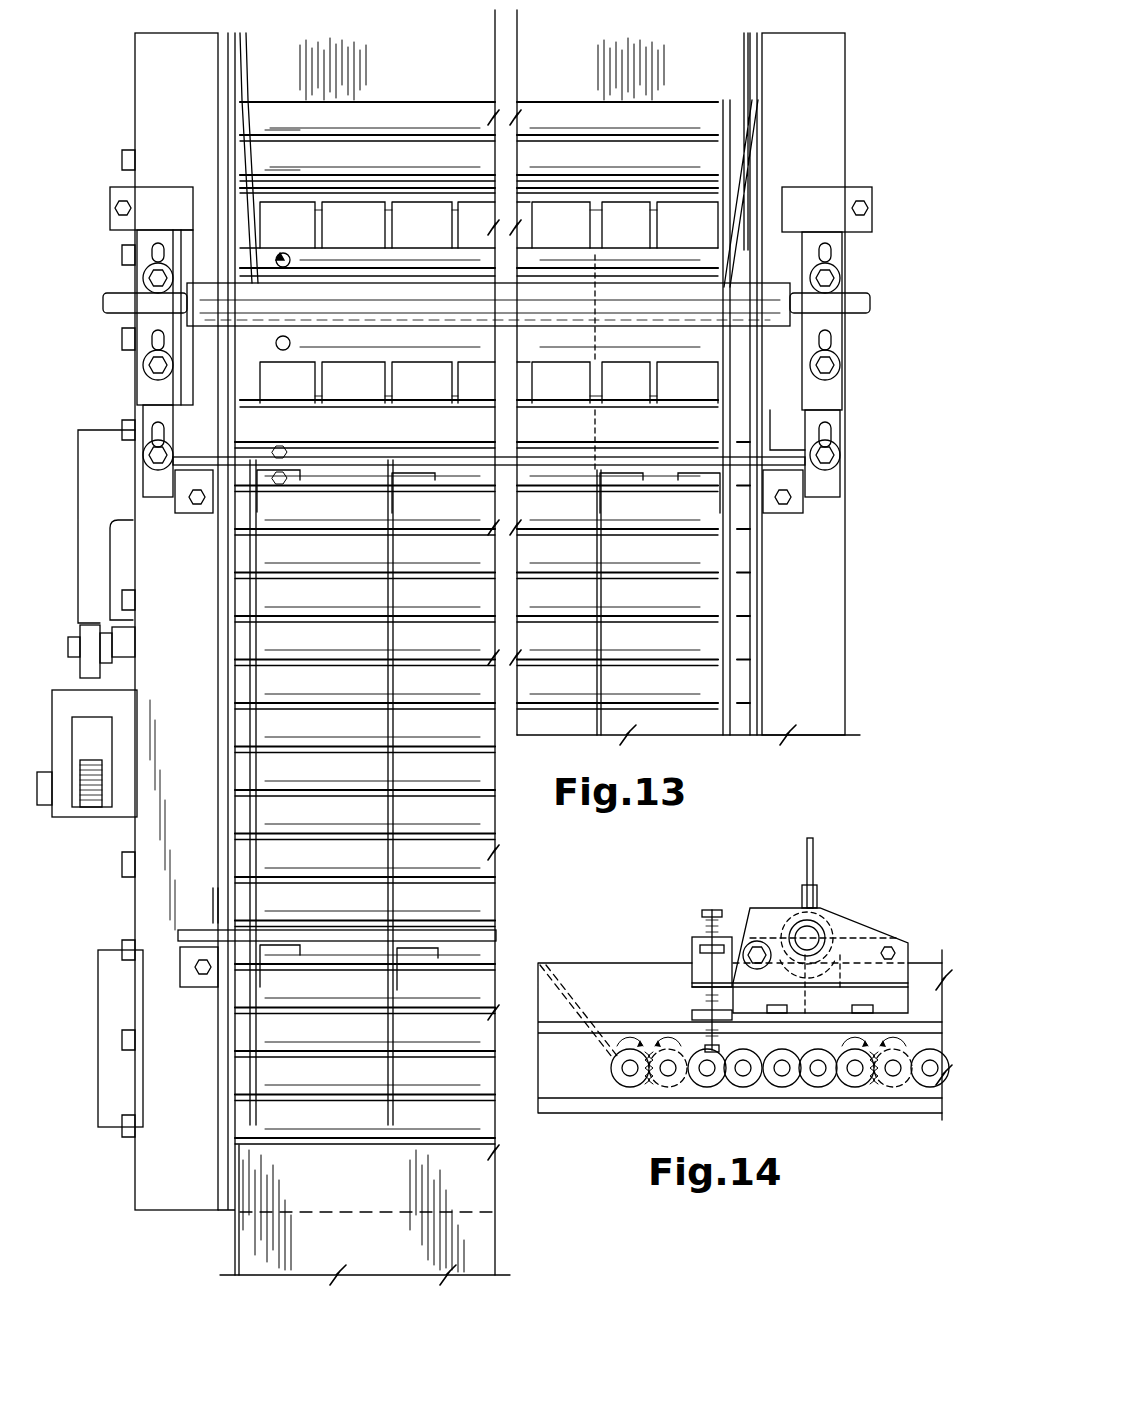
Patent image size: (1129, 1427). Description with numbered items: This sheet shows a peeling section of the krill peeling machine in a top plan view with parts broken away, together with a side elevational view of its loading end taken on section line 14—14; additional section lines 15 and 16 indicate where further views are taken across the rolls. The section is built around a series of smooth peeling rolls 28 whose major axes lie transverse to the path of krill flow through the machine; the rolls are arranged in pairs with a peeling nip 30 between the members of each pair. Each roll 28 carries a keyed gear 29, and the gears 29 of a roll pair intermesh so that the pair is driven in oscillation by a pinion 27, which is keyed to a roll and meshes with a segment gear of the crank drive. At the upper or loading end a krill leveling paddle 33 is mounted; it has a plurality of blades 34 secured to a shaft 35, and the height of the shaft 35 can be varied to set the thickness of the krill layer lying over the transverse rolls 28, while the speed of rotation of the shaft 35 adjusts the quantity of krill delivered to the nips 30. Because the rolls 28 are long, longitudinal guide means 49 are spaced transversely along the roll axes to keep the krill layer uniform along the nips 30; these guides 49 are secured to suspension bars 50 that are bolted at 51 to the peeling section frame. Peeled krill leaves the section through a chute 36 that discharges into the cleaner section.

In FIG. 13, the section line 14- 14 is at (62, 80).
In FIG. 13, the section line 15- 15 is at (212, 555).
In FIG. 13, the section line 16- 16 is at (214, 643).
In FIG. 13, the pinion 27 is at (90, 820).
In FIG. 13, the peeling roll 28 is at (452, 129).
In FIG. 14, the keyed gear 29 is at (655, 1092).
In FIG. 13, the peeling nip 30 is at (385, 150).
In FIG. 13, the krill leveling paddle 33 is at (693, 238).
In FIG. 14, the krill leveling paddle 33 is at (848, 898).
In FIG. 13, the blade 34 is at (572, 232).
In FIG. 14, the blade 34 is at (806, 858).
In FIG. 13, the shaft 35 is at (108, 292).
In FIG. 14, the shaft 35 is at (812, 940).
In FIG. 13, the chute 36 is at (357, 1200).
In FIG. 13, the longitudinal guide means 49 is at (595, 542).
In FIG. 14, the longitudinal guide means 49 is at (645, 968).
In FIG. 13, the suspension bar 50 is at (658, 462).
In FIG. 13, the bolt 51 is at (200, 506).